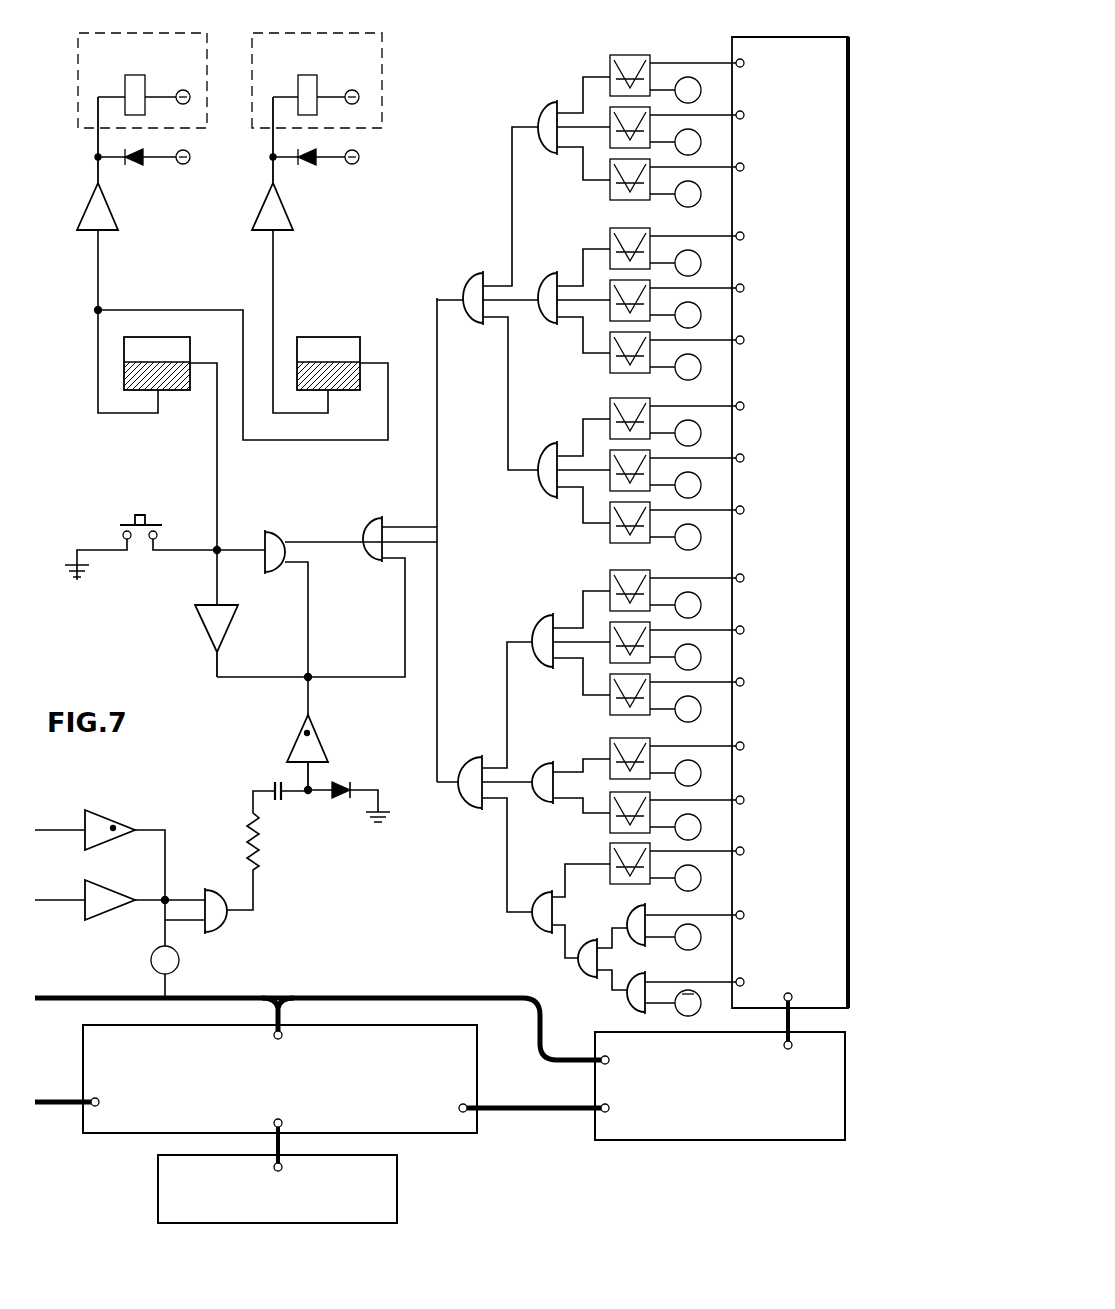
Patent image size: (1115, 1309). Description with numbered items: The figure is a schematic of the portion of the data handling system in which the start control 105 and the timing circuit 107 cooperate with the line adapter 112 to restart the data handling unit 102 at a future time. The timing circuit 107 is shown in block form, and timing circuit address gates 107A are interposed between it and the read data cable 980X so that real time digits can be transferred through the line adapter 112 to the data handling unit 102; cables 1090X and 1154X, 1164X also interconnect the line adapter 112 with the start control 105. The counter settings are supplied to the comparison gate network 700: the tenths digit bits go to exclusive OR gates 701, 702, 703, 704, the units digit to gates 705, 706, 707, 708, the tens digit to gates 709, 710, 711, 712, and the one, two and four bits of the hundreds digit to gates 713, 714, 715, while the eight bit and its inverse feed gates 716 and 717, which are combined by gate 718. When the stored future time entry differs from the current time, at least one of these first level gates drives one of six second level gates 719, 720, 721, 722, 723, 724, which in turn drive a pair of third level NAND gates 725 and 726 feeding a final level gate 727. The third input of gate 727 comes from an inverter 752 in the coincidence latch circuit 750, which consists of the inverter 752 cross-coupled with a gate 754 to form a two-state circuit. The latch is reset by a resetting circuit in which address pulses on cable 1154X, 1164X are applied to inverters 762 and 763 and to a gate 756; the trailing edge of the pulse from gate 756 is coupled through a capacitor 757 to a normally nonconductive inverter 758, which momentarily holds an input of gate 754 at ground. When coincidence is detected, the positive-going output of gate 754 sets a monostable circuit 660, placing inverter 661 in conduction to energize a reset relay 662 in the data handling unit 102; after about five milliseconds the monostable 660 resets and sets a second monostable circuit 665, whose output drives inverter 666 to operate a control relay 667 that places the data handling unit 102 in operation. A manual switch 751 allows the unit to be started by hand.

The data handling unit 102 is at (210, 40).
The start control 105 is at (442, 45).
The timing circuit 107 is at (735, 37).
The timing circuit address gates 107A is at (694, 1140).
The line adapter 112 is at (438, 1134).
The monostable circuit 660 is at (182, 339).
The inverter 661 is at (113, 215).
The relay 662 is at (133, 75).
The second monostable circuit 665 is at (354, 339).
The inverter 666 is at (288, 215).
The control relay 667 is at (306, 75).
The comparison gate network 700 is at (606, 44).
The exclusive OR gate 701 is at (610, 64).
The exclusive OR gate 702 is at (610, 137).
The exclusive OR gate 703 is at (610, 190).
The exclusive OR gate 704 is at (616, 228).
The exclusive OR gate 705 is at (610, 308).
The exclusive OR gate 706 is at (610, 363).
The exclusive OR gate 707 is at (620, 398).
The exclusive OR gate 708 is at (610, 480).
The exclusive OR gate 709 is at (608, 534).
The exclusive OR gate 710 is at (620, 570).
The exclusive OR gate 711 is at (608, 650).
The exclusive OR gate 712 is at (608, 703).
The exclusive OR gate 713 is at (620, 738).
The exclusive OR gate 714 is at (608, 823).
The exclusive OR gate 715 is at (606, 855).
The gate 716 is at (630, 910).
The gate 717 is at (628, 1005).
The gate 718 is at (580, 978).
The second level gate 719 is at (540, 112).
The second level gate 720 is at (542, 276).
The second level gate 721 is at (541, 448).
The second level gate 722 is at (536, 620).
The second level gate 723 is at (538, 768).
The second level gate 724 is at (540, 896).
The third level NAND gate 725 is at (468, 275).
The third level NAND gate 726 is at (463, 804).
The final level gate 727 is at (366, 556).
The coincidence latch circuit 750 is at (328, 512).
The manual switch 751 is at (120, 531).
The inverter 752 is at (204, 627).
The gate 754 is at (268, 538).
The gate 756 is at (220, 933).
The capacitor 757 is at (270, 785).
The inverter 758 is at (325, 747).
The inverter 762 is at (110, 918).
The inverter 763 is at (95, 815).
The read data cable 980X is at (514, 1110).
The cable 1090X is at (66, 1105).
The cable 1154X is at (446, 996).
The cable 1164X is at (410, 977).